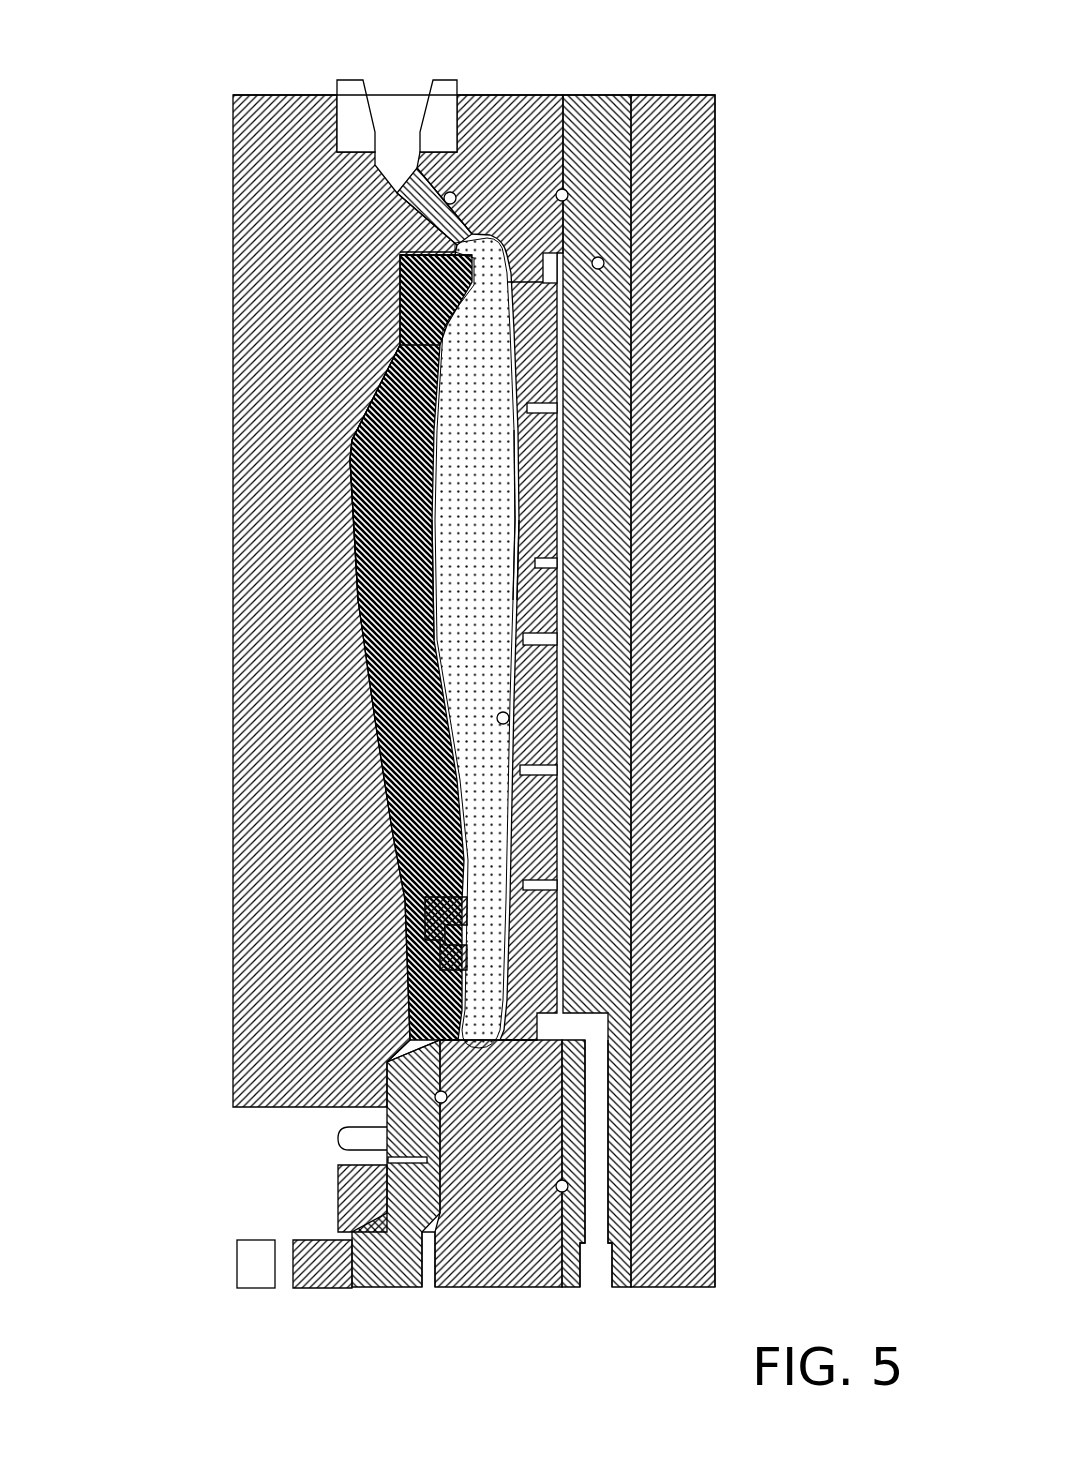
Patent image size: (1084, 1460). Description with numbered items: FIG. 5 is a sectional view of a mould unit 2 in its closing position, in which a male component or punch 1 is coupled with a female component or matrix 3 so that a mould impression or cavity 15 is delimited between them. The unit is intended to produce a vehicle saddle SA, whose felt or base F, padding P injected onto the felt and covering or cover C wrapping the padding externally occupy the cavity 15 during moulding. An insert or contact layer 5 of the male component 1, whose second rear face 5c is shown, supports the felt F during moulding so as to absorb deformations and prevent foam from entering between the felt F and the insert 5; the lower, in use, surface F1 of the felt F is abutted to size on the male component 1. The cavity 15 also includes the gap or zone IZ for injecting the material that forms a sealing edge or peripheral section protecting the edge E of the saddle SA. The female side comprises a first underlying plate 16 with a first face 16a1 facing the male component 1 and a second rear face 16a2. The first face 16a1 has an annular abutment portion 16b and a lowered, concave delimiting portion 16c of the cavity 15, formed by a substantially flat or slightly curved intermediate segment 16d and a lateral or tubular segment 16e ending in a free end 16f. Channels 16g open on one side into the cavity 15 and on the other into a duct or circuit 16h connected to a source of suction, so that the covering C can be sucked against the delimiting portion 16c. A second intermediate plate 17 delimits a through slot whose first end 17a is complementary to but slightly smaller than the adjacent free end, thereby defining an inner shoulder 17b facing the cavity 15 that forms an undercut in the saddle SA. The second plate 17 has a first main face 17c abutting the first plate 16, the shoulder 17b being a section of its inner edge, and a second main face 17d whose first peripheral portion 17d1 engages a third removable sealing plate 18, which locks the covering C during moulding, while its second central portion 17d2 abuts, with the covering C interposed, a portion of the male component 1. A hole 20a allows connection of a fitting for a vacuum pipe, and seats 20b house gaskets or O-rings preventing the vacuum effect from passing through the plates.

The male component 1 is at (250, 780).
The mould unit 2 is at (717, 183).
The female component 3 is at (540, 315).
The insert 5 is at (410, 630).
The second rear face 5c is at (345, 455).
The mould impression 15 is at (510, 718).
The first plate 16 is at (535, 113).
The first face 16a1 is at (505, 915).
The second rear face 16a2 is at (718, 935).
The annular abutment portion 16b is at (453, 167).
The delimiting portion 16c is at (515, 360).
The intermediate segment 16d is at (520, 590).
The lateral segment 16e is at (495, 227).
The free end 16f is at (440, 240).
The channels 16g is at (520, 770).
The duct 16h is at (557, 965).
The second intermediate plate 17 is at (405, 1273).
The first end 17a is at (410, 1127).
The inner shoulder 17b is at (540, 1020).
The first main face 17c is at (400, 1207).
The second main face 17d is at (385, 1172).
The first peripheral portion 17d1 is at (455, 1285).
The second central portion 17d2 is at (392, 1072).
The third removable sealing plate 18 is at (318, 1247).
The hole 20a is at (580, 1245).
The seats 20b is at (450, 192).
The injection zone IZ is at (450, 247).
The felt F is at (410, 345).
The lower surface of the felt F1 is at (410, 505).
The padding P is at (487, 420).
The saddle SA is at (490, 548).
The covering C is at (520, 606).
The edge E is at (402, 1052).